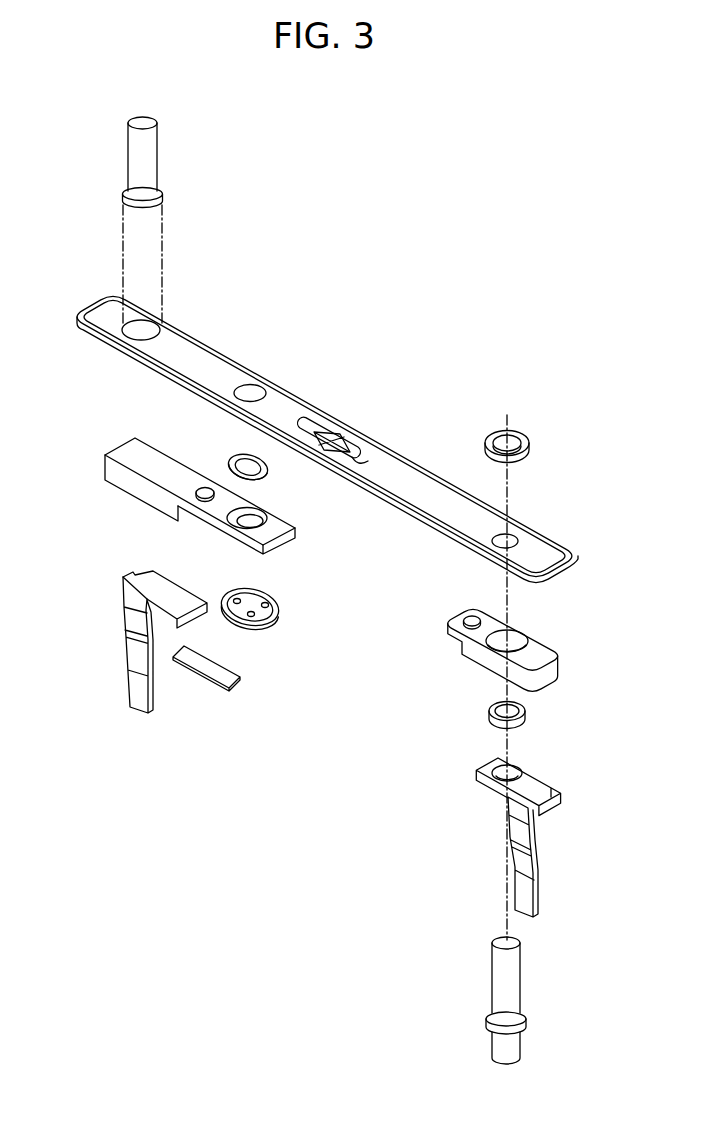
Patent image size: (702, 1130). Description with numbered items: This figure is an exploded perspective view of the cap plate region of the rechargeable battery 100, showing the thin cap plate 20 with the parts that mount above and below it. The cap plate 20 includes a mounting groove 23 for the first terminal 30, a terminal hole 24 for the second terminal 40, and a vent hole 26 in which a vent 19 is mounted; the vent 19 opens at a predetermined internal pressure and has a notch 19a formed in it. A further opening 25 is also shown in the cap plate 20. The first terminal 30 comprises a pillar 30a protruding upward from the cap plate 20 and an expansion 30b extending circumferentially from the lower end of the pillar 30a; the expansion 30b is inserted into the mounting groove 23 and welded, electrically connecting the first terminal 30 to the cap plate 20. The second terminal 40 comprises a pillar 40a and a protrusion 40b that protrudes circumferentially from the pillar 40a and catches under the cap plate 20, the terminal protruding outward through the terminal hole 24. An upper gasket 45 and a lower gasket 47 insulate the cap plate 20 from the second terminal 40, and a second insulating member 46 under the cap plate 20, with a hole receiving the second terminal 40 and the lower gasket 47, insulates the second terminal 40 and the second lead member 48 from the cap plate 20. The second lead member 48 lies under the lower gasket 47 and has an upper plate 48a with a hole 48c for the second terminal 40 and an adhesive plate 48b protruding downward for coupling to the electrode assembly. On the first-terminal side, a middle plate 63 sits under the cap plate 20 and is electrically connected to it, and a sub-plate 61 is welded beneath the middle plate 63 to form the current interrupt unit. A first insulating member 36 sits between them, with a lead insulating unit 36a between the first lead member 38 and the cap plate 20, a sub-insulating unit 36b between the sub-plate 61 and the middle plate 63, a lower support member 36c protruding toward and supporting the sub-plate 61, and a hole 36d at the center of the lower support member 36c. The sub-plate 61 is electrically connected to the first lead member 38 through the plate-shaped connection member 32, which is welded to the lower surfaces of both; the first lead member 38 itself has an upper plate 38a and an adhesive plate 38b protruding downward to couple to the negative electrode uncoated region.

The rechargeable battery 100 is at (384, 284).
The cap plate 20 is at (212, 342).
The mounting groove 23 is at (150, 323).
The hole 25 is at (250, 386).
The vent 19 is at (312, 425).
The vent hole 26 is at (341, 440).
The notch 19a is at (374, 456).
The terminal hole 24 is at (512, 535).
The first terminal 30 is at (106, 168).
The pillar 30a is at (151, 147).
The expansion 30b is at (163, 194).
The first insulating member 36 is at (120, 433).
The lead insulating unit 36a is at (124, 482).
The sub-insulating unit 36b is at (200, 522).
The lower support member 36c is at (268, 516).
The hole 36d is at (266, 526).
The middle plate 63 is at (230, 459).
The sub-plate 61 is at (280, 609).
The connection member 32 is at (228, 676).
The first lead member 38 is at (104, 590).
The upper plate 38a is at (180, 592).
The adhesive plate 38b is at (135, 687).
The upper gasket 45 is at (531, 447).
The second insulating member 46 is at (558, 684).
The lower gasket 47 is at (488, 713).
The second lead member 48 is at (461, 794).
The upper plate 48a is at (548, 772).
The adhesive plate 48b is at (523, 890).
The hole 48c is at (494, 771).
The second terminal 40 is at (471, 993).
The pillar 40a is at (519, 981).
The protrusion 40b is at (527, 1023).